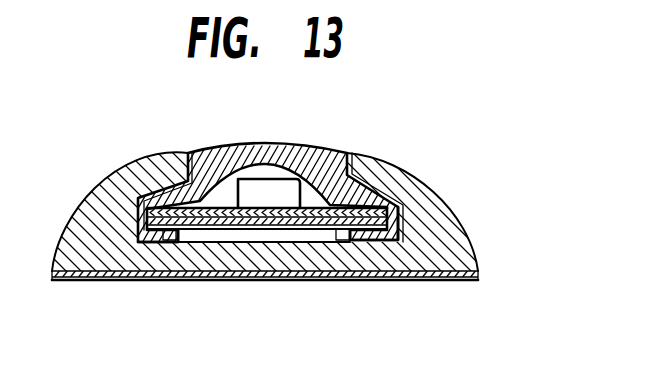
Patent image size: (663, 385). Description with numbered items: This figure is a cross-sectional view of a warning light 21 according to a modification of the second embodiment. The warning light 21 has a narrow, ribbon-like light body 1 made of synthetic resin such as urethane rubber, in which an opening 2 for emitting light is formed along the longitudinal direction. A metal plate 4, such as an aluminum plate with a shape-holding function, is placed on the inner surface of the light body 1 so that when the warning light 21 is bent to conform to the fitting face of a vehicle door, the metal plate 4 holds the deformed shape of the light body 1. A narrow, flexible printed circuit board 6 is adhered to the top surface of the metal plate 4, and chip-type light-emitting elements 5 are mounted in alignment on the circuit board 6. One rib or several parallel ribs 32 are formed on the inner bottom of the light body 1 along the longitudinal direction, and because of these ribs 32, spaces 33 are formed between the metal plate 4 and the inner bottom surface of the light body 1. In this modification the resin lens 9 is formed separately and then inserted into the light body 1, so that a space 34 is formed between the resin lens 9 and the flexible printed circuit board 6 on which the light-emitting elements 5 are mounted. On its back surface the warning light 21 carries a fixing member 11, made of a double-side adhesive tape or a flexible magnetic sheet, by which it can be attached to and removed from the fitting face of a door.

The light body 1 is at (423, 183).
The opening 2 is at (191, 150).
The metal plate 4 is at (366, 243).
The light-emitting elements 5 is at (258, 190).
The flexible printed circuit board 6 is at (316, 222).
The resin lens 9 is at (312, 205).
The fixing member 11 is at (447, 280).
The warning light 21 is at (352, 86).
The ribs 32 is at (172, 240).
The spaces 33 is at (277, 237).
The space 34 is at (223, 191).